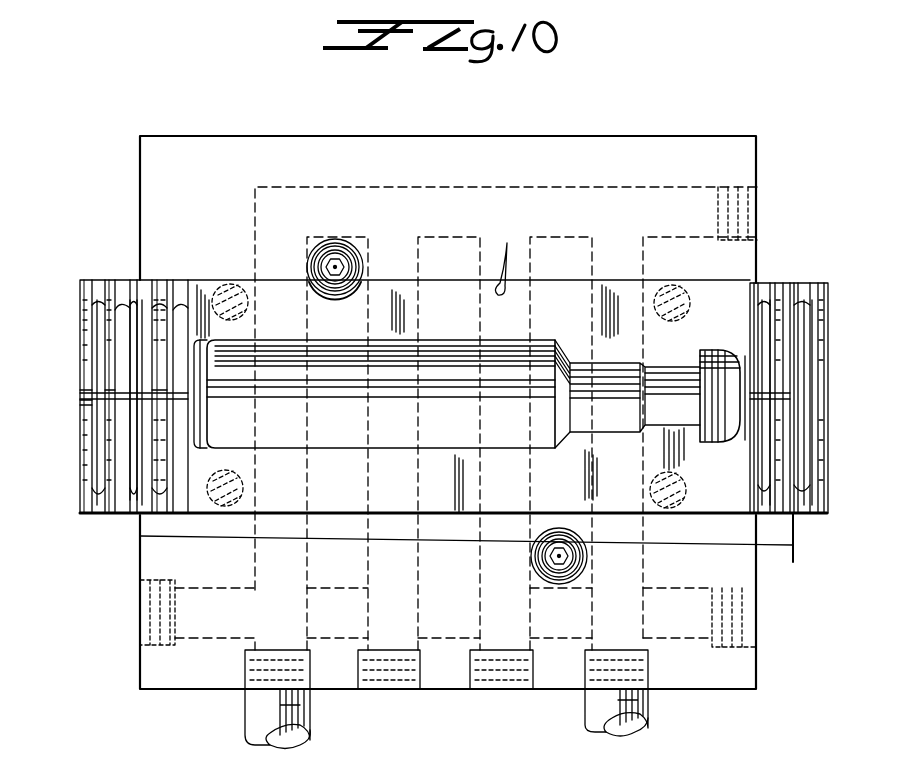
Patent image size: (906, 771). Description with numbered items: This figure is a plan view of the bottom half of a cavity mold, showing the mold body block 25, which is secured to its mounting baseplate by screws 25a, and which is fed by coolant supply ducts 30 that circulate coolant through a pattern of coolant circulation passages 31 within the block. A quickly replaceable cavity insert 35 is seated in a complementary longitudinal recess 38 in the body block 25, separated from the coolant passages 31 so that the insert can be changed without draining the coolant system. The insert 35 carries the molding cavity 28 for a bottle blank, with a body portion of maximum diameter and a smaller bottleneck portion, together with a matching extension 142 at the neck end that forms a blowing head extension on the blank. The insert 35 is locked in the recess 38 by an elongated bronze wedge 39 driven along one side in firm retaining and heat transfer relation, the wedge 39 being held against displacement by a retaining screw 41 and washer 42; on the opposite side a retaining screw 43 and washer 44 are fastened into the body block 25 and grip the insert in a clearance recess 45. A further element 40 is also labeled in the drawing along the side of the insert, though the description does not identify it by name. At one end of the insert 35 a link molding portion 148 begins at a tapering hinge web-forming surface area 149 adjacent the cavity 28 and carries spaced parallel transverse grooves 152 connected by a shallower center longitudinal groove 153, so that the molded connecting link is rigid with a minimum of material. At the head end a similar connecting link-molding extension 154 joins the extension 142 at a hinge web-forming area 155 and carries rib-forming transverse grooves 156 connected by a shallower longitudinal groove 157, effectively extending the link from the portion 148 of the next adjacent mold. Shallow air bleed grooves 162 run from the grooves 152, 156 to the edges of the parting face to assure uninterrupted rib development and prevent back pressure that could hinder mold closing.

The mold body block 25 is at (175, 670).
The screws 25a is at (258, 292).
The molding cavity 28 is at (340, 441).
The coolant supply ducts 30 is at (247, 720).
The coolant circulation passages 31 is at (626, 613).
The cavity insert 35 is at (570, 298).
The longitudinal recess 38 is at (503, 259).
The wedge 39 is at (794, 562).
The plate 40 is at (460, 534).
The retaining screw 41 is at (547, 574).
The washer 42 is at (550, 567).
The retaining screw 43 is at (352, 253).
The washer 44 is at (361, 271).
The clearance recess 45 is at (320, 294).
The extension 142 is at (663, 420).
The link molding portion 148 is at (155, 435).
The hinge web-forming surface area 149 is at (197, 437).
The transverse grooves 152 is at (135, 300).
The longitudinal groove 153 is at (80, 400).
The connecting link-molding extension 154 is at (799, 307).
The hinge web-forming area 155 is at (740, 440).
The transverse grooves 156 is at (800, 478).
The longitudinal groove 157 is at (818, 398).
The air bleed grooves 162 is at (105, 290).